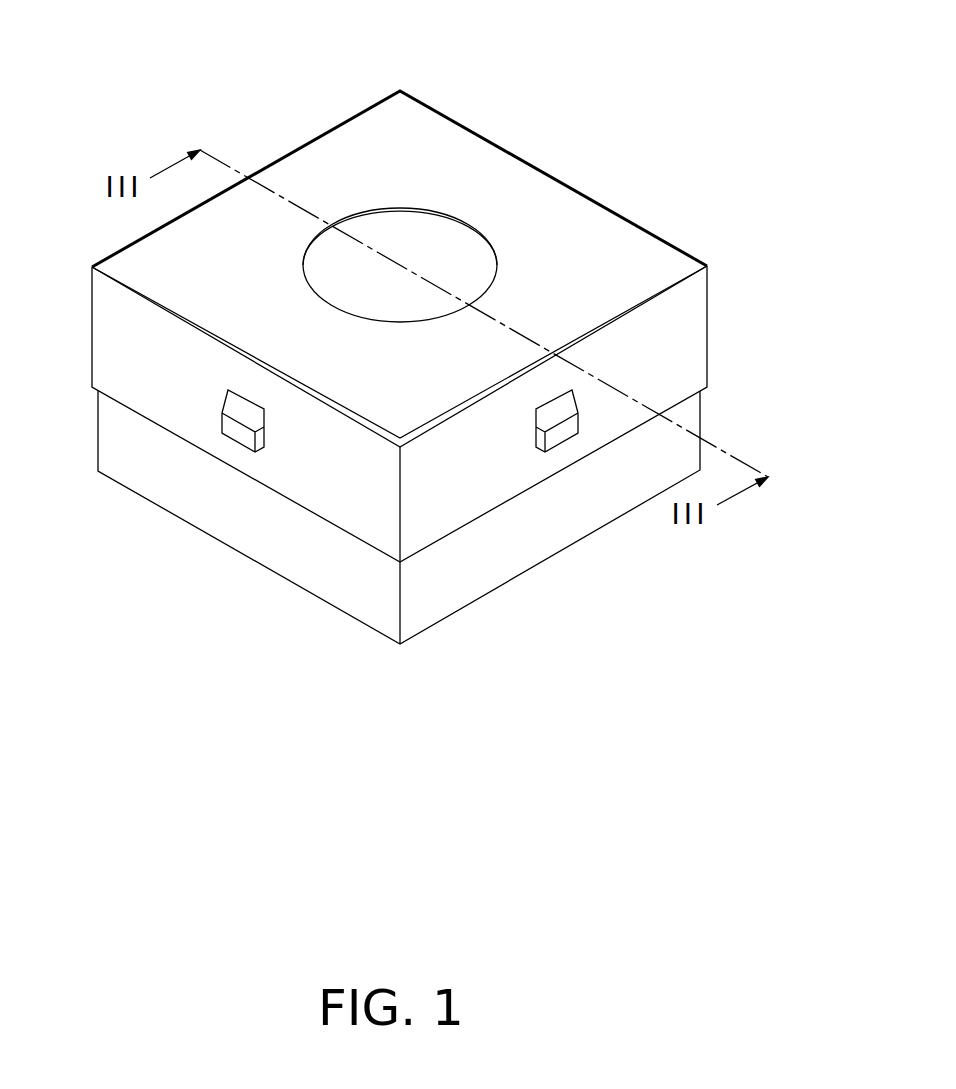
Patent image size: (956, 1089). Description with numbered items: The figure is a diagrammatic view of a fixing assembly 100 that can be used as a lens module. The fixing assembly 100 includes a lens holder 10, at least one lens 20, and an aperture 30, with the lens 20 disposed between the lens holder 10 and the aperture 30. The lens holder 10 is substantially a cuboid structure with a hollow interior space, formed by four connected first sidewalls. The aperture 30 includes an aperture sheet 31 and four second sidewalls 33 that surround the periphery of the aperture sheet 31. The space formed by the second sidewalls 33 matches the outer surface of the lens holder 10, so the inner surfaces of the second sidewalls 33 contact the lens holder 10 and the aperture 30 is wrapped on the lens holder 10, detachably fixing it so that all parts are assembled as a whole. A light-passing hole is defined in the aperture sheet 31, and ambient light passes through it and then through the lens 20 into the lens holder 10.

The fixing assembly 100 is at (437, 37).
The lens holder 10 is at (542, 547).
The lens 20 is at (403, 230).
The aperture 30 is at (697, 171).
The aperture sheet 31 is at (628, 248).
The second sidewall 33 is at (685, 310).